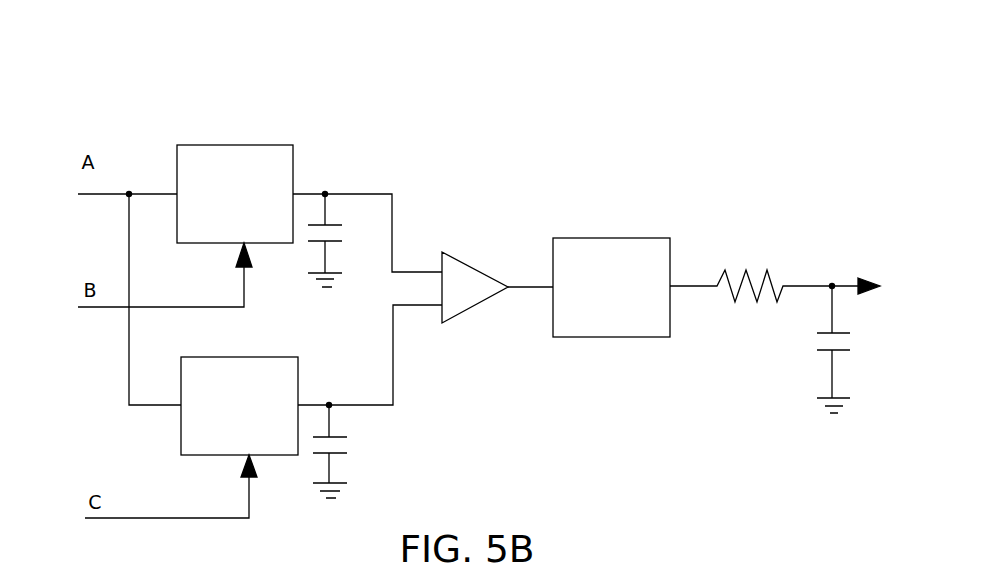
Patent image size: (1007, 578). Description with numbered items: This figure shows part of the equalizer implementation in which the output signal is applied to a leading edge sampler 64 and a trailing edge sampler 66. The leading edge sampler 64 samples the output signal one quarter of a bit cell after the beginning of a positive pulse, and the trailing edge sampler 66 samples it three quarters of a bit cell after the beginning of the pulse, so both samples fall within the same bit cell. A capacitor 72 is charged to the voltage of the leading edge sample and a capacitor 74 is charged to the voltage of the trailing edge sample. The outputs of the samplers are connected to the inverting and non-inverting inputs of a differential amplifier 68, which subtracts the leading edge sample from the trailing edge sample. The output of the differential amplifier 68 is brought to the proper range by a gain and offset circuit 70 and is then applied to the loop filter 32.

The trailing edge sampler 66 is at (227, 143).
The leading edge sampler 64 is at (232, 355).
The capacitor 74 is at (342, 232).
The capacitor 72 is at (347, 443).
The differential amplifier 68 is at (472, 273).
The gain and offset circuit 70 is at (621, 237).
The loop filter 32 is at (783, 253).